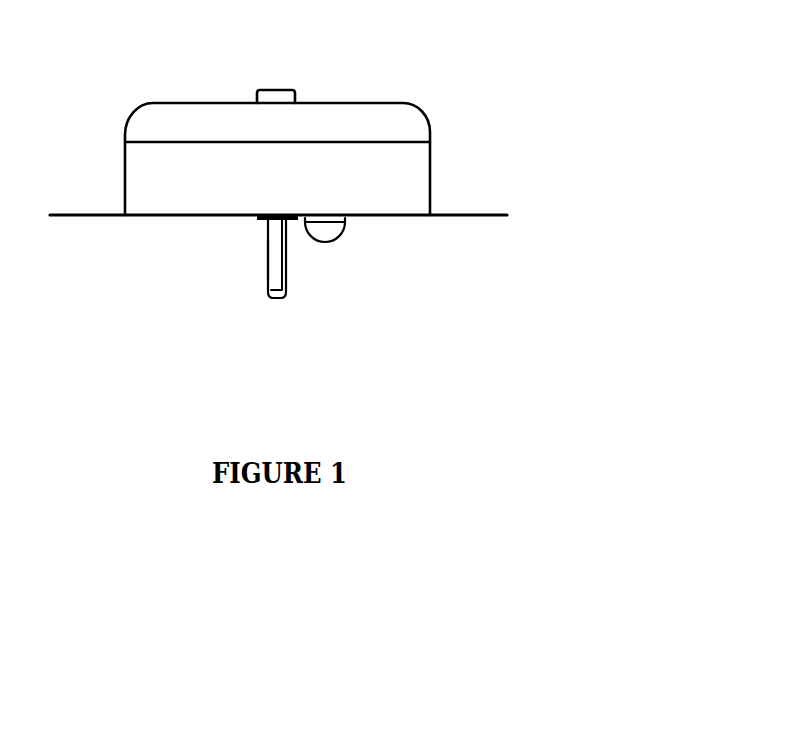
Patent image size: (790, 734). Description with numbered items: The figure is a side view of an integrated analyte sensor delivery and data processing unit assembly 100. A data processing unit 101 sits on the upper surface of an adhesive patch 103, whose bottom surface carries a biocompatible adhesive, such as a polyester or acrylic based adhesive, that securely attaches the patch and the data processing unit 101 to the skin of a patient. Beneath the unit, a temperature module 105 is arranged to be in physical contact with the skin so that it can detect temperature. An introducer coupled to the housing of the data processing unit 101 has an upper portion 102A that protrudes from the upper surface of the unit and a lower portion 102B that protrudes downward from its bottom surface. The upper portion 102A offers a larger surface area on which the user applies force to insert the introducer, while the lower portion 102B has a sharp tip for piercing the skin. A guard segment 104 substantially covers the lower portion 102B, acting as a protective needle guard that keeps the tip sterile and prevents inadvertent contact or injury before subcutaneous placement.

The integrated analyte sensor delivery and data processing unit assembly 100 is at (302, 387).
The data processing unit 101 is at (408, 103).
The upper portion of the introducer 102A is at (278, 89).
The lower portion of the introducer 102B is at (275, 274).
The adhesive patch 103 is at (470, 213).
The guard segment 104 is at (268, 258).
The temperature module 105 is at (343, 235).